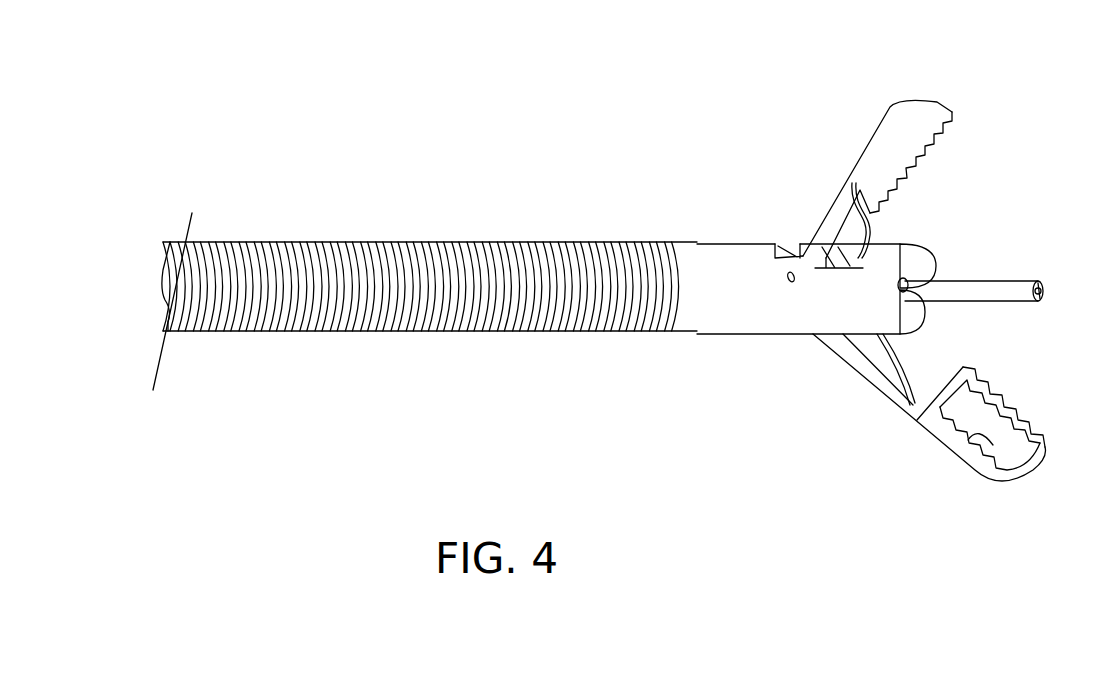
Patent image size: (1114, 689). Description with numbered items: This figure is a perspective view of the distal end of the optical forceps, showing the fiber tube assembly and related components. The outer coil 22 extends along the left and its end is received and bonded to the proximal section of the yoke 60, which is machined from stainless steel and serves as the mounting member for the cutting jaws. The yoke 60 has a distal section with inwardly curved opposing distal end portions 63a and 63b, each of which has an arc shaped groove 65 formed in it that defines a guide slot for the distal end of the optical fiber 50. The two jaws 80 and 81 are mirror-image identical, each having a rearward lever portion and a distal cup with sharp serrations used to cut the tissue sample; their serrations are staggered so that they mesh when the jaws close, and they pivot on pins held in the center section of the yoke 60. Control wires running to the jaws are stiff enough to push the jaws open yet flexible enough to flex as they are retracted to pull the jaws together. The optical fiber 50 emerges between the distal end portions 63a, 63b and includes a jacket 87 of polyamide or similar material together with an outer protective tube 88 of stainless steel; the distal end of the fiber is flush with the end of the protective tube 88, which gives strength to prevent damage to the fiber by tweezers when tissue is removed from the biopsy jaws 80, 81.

The coil 22 is at (370, 238).
The yoke 60 is at (762, 322).
The jaw 80 is at (912, 100).
The jaw 81 is at (1010, 487).
The distal end portion 63a is at (910, 252).
The distal end portion 63b is at (917, 323).
The arc shaped groove 65 is at (905, 275).
The optical fiber 50 is at (1043, 297).
The outer protective tube 88 is at (1025, 282).
The jacket 87 is at (1042, 290).